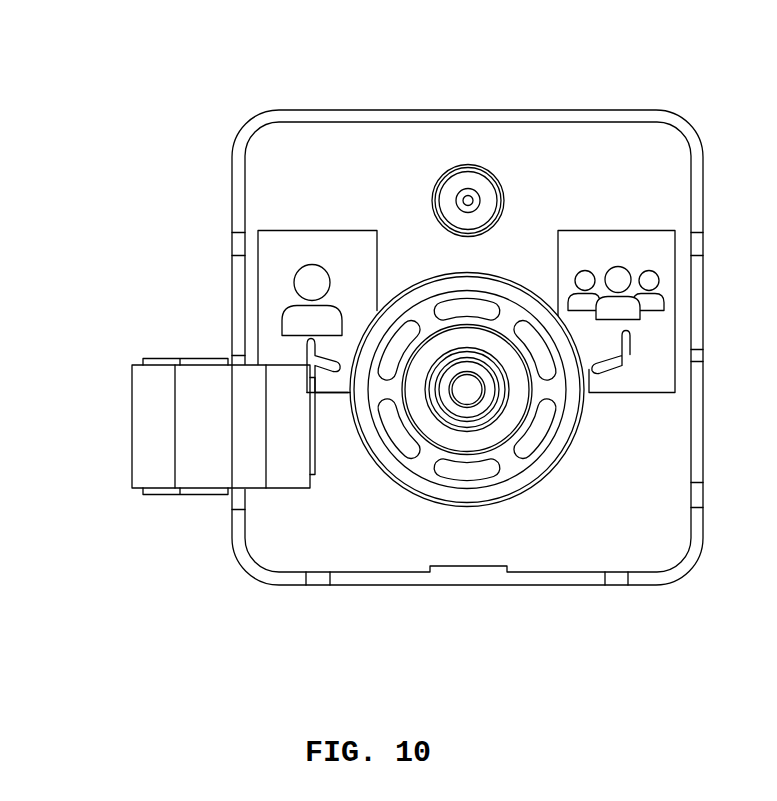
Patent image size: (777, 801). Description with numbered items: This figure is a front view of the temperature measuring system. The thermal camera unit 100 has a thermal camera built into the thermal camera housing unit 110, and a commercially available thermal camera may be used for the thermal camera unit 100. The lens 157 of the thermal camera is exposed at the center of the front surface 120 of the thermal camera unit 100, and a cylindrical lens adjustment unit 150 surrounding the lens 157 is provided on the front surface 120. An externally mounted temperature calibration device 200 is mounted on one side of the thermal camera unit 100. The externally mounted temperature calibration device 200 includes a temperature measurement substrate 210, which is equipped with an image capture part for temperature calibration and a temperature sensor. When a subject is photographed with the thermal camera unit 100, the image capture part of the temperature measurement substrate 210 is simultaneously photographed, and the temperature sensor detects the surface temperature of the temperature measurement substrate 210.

The thermal camera unit 100 is at (467, 112).
The thermal camera housing unit 110 is at (586, 112).
The front surface 120 is at (385, 538).
The cylindrical lens adjustment unit 150 is at (500, 462).
The lens 157 is at (467, 392).
The externally mounted temperature calibration device 200 is at (163, 358).
The temperature measurement substrate 210 is at (147, 424).